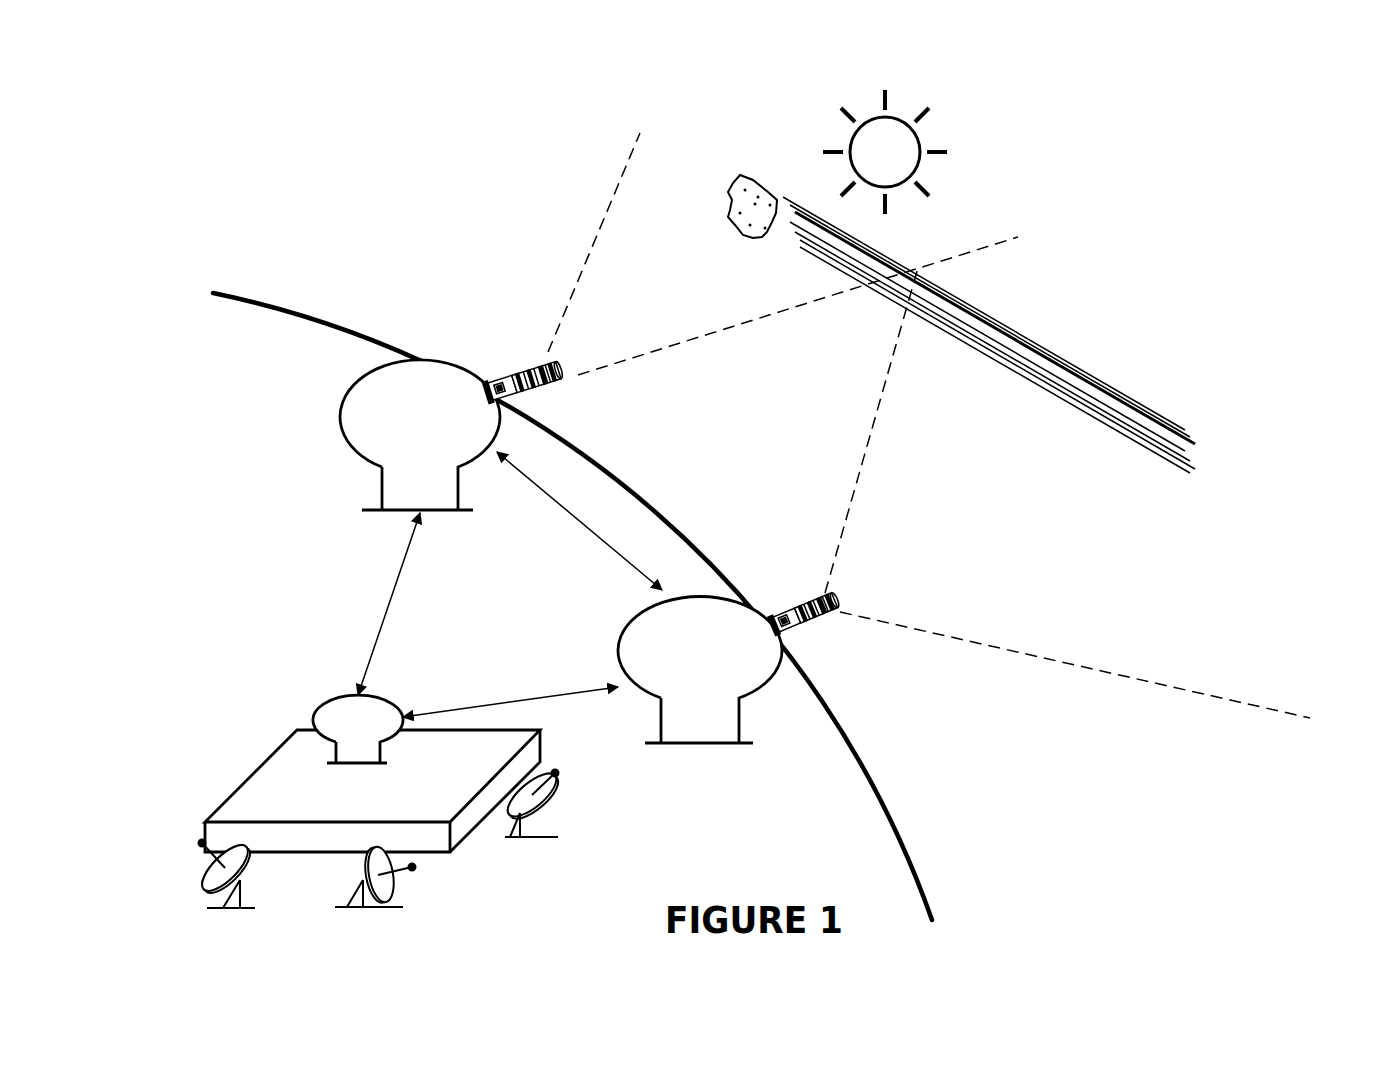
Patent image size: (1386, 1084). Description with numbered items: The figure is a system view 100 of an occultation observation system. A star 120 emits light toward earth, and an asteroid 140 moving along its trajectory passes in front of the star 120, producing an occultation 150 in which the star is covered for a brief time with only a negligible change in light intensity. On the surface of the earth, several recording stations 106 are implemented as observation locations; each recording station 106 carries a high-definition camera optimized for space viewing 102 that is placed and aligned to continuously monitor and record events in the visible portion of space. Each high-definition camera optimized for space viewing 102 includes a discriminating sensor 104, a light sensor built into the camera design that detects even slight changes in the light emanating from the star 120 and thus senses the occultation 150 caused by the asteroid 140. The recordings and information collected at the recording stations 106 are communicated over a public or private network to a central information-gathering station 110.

The system view 100 is at (1131, 862).
The high-definition camera optimized for space viewing 102 is at (866, 602).
The discriminating sensor 104 is at (527, 390).
The recording station 106 is at (620, 650).
The central information-gathering station 110 is at (290, 752).
The star 120 is at (906, 137).
The asteroid 140 is at (727, 212).
The occultation 150 is at (790, 240).